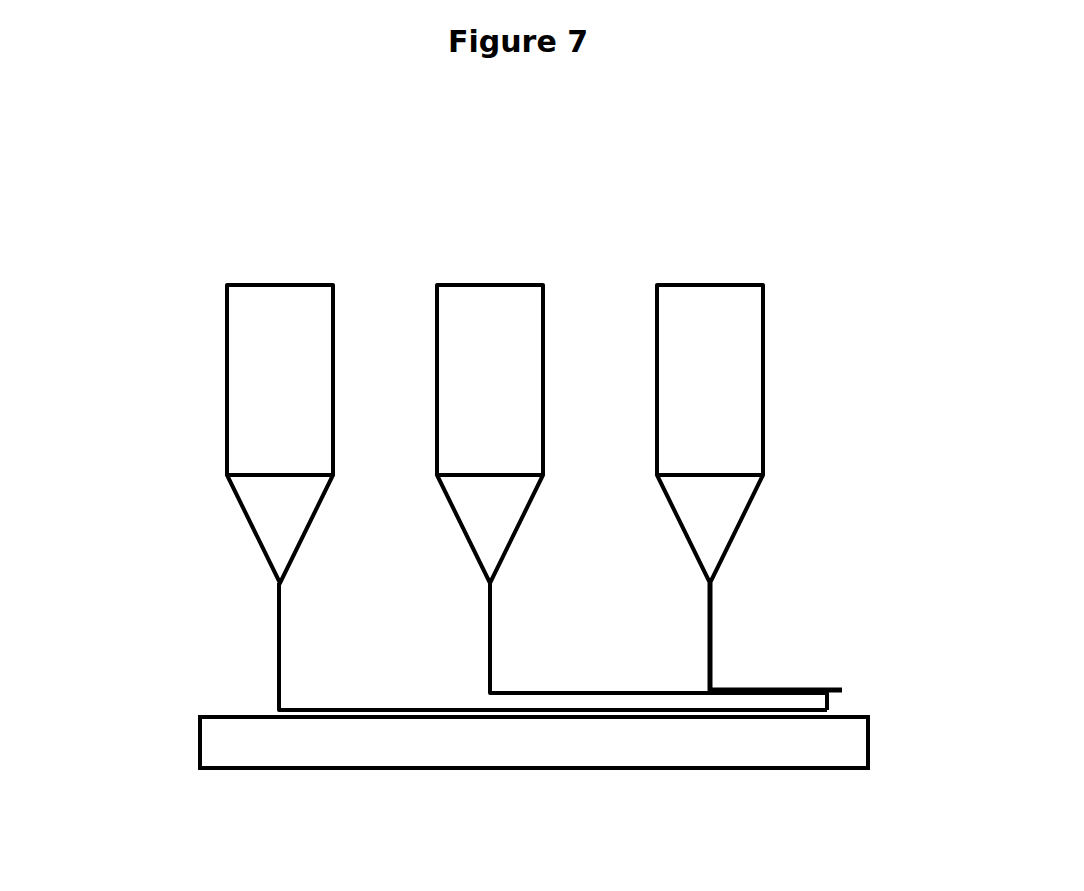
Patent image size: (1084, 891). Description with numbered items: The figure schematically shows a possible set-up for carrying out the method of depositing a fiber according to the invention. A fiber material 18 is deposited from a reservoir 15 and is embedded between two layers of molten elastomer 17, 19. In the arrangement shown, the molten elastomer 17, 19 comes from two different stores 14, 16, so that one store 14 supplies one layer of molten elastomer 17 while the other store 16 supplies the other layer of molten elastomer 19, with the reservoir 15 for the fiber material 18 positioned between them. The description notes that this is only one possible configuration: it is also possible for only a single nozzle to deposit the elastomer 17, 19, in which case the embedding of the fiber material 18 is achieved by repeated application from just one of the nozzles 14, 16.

The store 14 is at (286, 257).
The reservoir 15 is at (508, 257).
The store 16 is at (706, 257).
The layer of molten elastomer 17 is at (258, 655).
The fiber material 18 is at (606, 716).
The layer of molten elastomer 19 is at (785, 676).